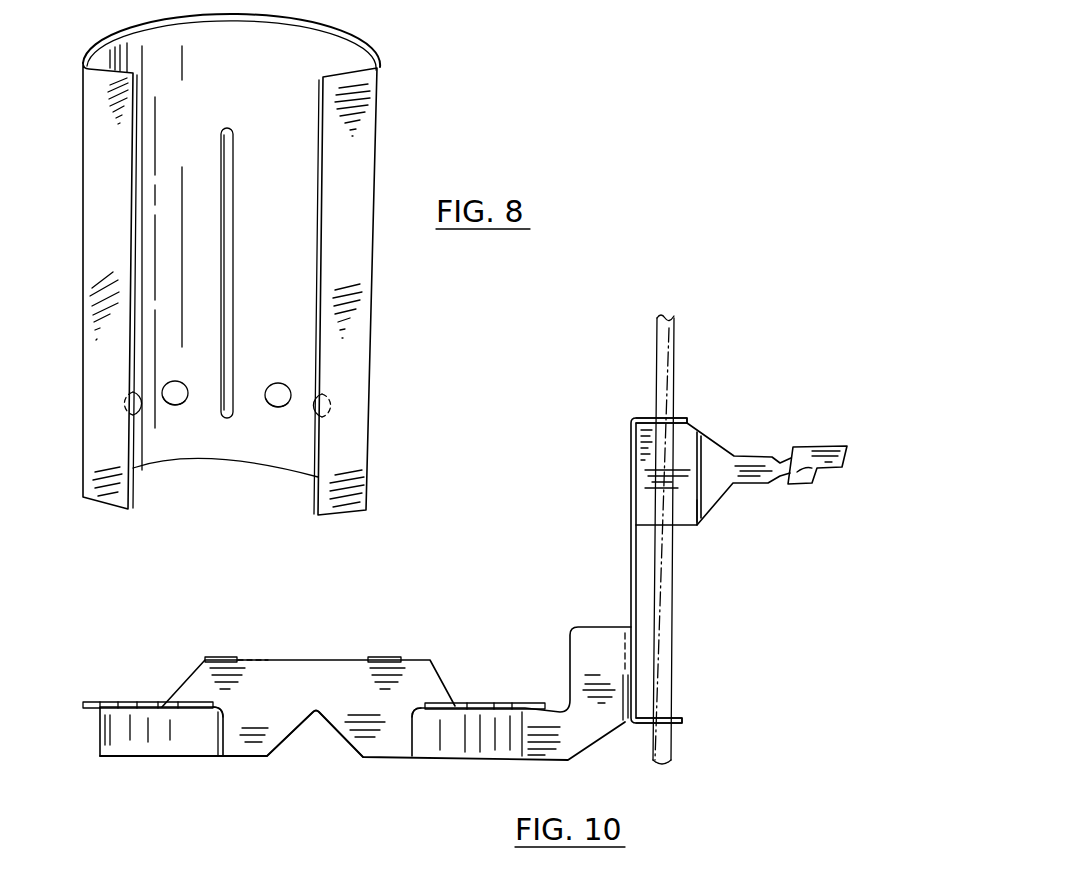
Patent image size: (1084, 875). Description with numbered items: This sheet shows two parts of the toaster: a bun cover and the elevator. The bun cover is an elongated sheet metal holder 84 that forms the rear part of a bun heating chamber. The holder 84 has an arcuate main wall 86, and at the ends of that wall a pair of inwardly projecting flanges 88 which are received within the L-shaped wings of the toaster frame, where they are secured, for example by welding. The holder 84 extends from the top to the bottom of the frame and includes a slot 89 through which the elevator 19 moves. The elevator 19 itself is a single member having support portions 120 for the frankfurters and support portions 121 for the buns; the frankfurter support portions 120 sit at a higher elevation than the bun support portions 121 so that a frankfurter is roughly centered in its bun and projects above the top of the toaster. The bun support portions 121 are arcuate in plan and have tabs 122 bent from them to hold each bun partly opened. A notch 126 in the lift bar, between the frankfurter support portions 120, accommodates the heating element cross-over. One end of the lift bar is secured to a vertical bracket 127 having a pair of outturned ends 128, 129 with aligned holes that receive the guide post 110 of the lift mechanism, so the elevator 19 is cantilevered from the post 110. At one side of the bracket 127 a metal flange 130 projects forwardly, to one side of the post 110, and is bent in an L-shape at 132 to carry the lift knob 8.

In FIG. 8, the holder 84 is at (386, 65).
In FIG. 8, the arcuate main wall 86 is at (314, 52).
In FIG. 8, the inwardly projecting flanges 88 is at (97, 148).
In FIG. 8, the slot 89 is at (225, 148).
In FIG. 10, the lift knob 8 is at (809, 447).
In FIG. 10, the elevator 19 is at (483, 634).
In FIG. 10, the guide post 110 is at (673, 388).
In FIG. 10, the frankfurter support portions 120 is at (222, 656).
In FIG. 10, the bun support portions 121 is at (396, 716).
In FIG. 10, the tabs 122 is at (132, 702).
In FIG. 10, the notch 126 is at (335, 733).
In FIG. 10, the vertical bracket 127 is at (629, 566).
In FIG. 10, the outturned end 128 is at (648, 418).
In FIG. 10, the outturned end 129 is at (678, 724).
In FIG. 10, the metal flange 130 is at (688, 435).
In FIG. 10, the L-shaped bend 132 is at (696, 500).